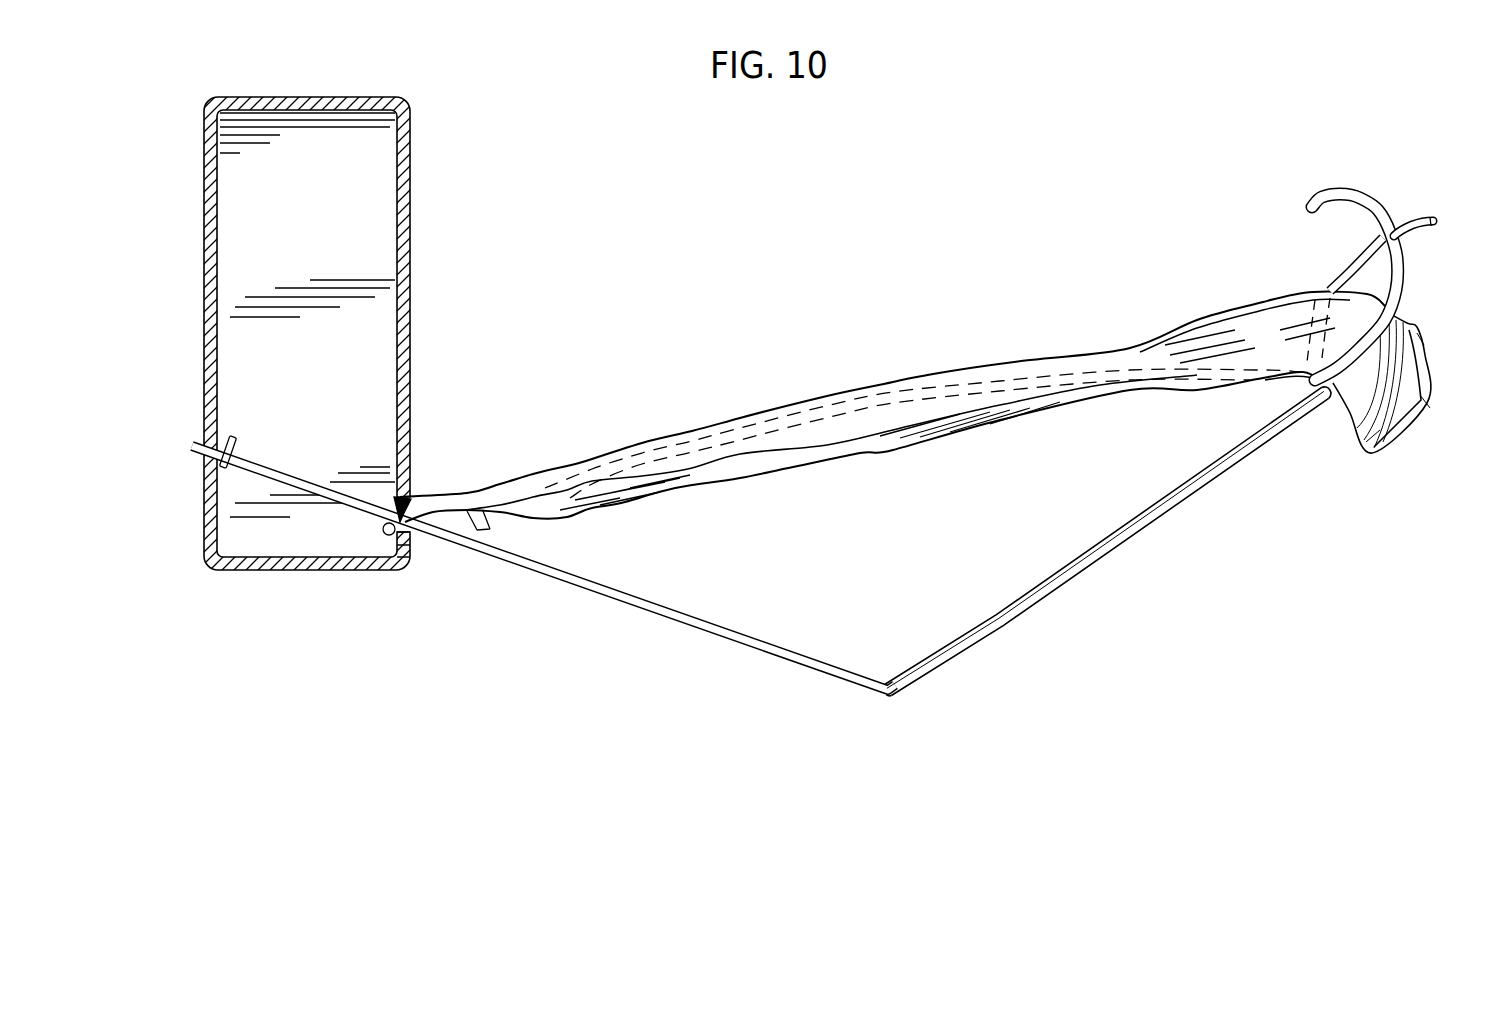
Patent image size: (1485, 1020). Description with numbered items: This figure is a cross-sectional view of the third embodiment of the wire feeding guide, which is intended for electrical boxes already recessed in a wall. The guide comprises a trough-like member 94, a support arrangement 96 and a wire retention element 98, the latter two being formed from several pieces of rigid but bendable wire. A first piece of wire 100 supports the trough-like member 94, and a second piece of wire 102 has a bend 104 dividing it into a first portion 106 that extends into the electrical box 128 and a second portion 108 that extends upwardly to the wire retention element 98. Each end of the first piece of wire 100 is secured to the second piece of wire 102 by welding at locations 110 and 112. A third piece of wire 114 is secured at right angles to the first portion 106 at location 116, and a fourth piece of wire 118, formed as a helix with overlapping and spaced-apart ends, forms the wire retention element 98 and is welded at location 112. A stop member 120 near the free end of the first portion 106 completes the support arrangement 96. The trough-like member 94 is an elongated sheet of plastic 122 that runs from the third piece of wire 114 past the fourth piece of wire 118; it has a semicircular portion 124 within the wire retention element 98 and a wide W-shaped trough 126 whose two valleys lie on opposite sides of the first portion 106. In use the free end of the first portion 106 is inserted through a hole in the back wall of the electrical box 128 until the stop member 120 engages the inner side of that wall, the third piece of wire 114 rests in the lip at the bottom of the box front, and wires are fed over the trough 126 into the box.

The trough-like member 94 is at (863, 456).
The support arrangement 96 is at (688, 641).
The wire retention element 98 is at (1334, 229).
The first piece of wire 100 is at (1277, 388).
The second piece of wire 102 is at (990, 630).
The bend 104 is at (887, 697).
The first portion 106 is at (357, 507).
The second portion 108 is at (1090, 567).
The welding location 110 is at (410, 530).
The welding location 112 is at (1337, 400).
The third piece of wire 114 is at (380, 536).
The securing location 116 is at (413, 503).
The fourth piece of wire 118 is at (1400, 280).
The stop member 120 is at (243, 477).
The elongated sheet of plastic 122 is at (977, 422).
The semicircular portion 124 is at (1293, 308).
The W-shaped trough 126 is at (863, 398).
The electrical box 128 is at (420, 169).